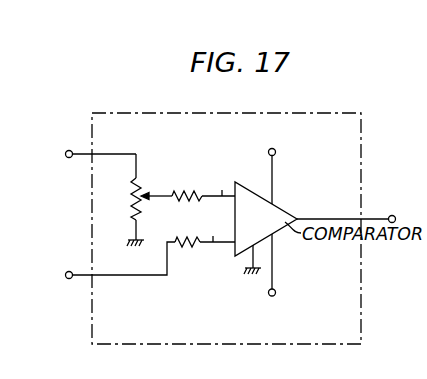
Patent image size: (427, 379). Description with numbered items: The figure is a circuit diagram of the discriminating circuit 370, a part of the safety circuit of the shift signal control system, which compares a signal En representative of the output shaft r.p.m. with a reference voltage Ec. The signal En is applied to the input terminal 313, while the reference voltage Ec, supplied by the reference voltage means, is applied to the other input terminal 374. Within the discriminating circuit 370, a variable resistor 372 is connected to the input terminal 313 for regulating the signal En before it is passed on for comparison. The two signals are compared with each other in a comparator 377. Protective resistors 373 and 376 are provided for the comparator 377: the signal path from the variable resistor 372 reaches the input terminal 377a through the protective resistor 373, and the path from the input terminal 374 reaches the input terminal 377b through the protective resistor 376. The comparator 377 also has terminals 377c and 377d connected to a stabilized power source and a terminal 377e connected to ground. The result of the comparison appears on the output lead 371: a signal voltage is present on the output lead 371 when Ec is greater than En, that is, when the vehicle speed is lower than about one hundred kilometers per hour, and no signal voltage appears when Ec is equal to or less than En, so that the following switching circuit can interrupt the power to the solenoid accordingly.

The discriminating circuit 370 is at (352, 112).
The input terminal 313 is at (77, 152).
The variable resistor 372 is at (134, 212).
The input terminal 374 is at (77, 278).
The protective resistor 373 is at (187, 192).
The protective resistor 376 is at (212, 241).
The comparator 377 is at (284, 226).
The input terminal 377a is at (222, 194).
The input terminal 377b is at (213, 244).
The terminal 377c is at (274, 187).
The terminal 377d is at (274, 270).
The terminal 377e is at (244, 262).
The output lead 371 is at (376, 216).